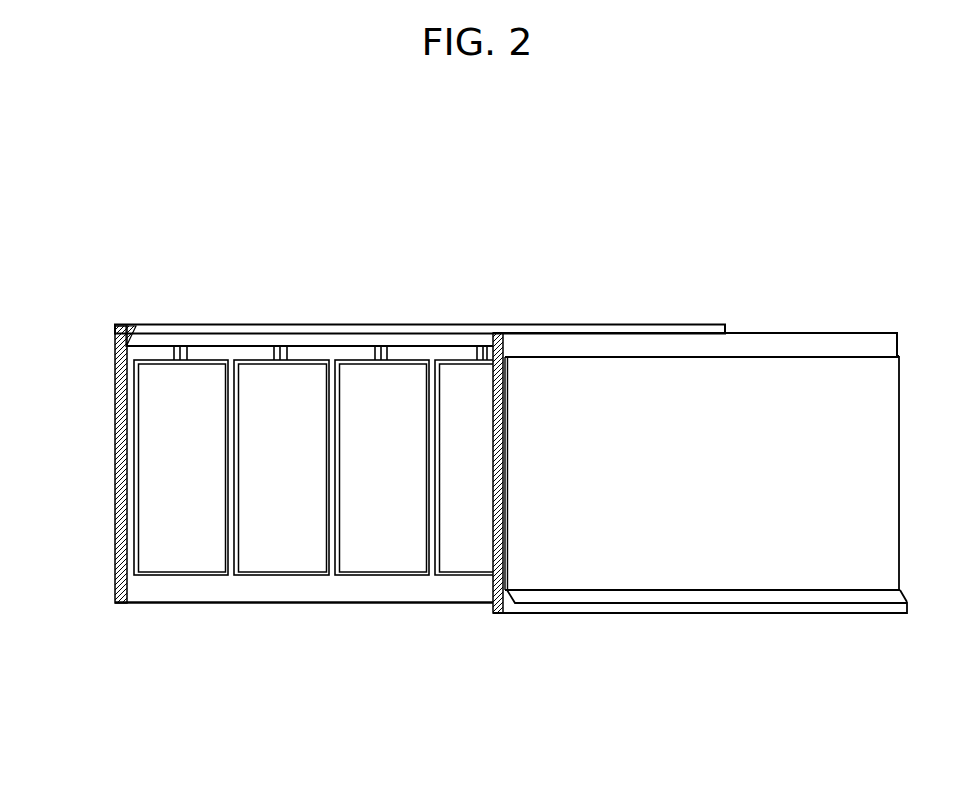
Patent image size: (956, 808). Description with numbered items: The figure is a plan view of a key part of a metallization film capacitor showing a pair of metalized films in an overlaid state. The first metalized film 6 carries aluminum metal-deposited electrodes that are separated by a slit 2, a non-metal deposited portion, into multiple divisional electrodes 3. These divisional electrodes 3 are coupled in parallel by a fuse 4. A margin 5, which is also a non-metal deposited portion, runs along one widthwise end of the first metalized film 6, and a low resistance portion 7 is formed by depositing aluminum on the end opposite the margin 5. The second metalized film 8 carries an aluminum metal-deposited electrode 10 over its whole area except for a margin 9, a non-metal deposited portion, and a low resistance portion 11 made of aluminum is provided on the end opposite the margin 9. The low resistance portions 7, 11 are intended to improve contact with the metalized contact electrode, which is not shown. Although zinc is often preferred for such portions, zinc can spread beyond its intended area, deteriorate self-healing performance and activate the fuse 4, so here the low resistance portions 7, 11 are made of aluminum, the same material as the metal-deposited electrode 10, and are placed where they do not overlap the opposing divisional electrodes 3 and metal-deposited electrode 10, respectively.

The slit 2 is at (232, 398).
The divisional electrodes 3 is at (200, 555).
The fuse 4 is at (182, 353).
The margin 5 is at (297, 592).
The first metalized film 6 is at (443, 296).
The low resistance portion 7 is at (120, 318).
The second metalized film 8 is at (716, 480).
The margin 9 is at (798, 347).
The metal-deposited electrode 10 is at (872, 373).
The low resistance portion 11 is at (503, 622).